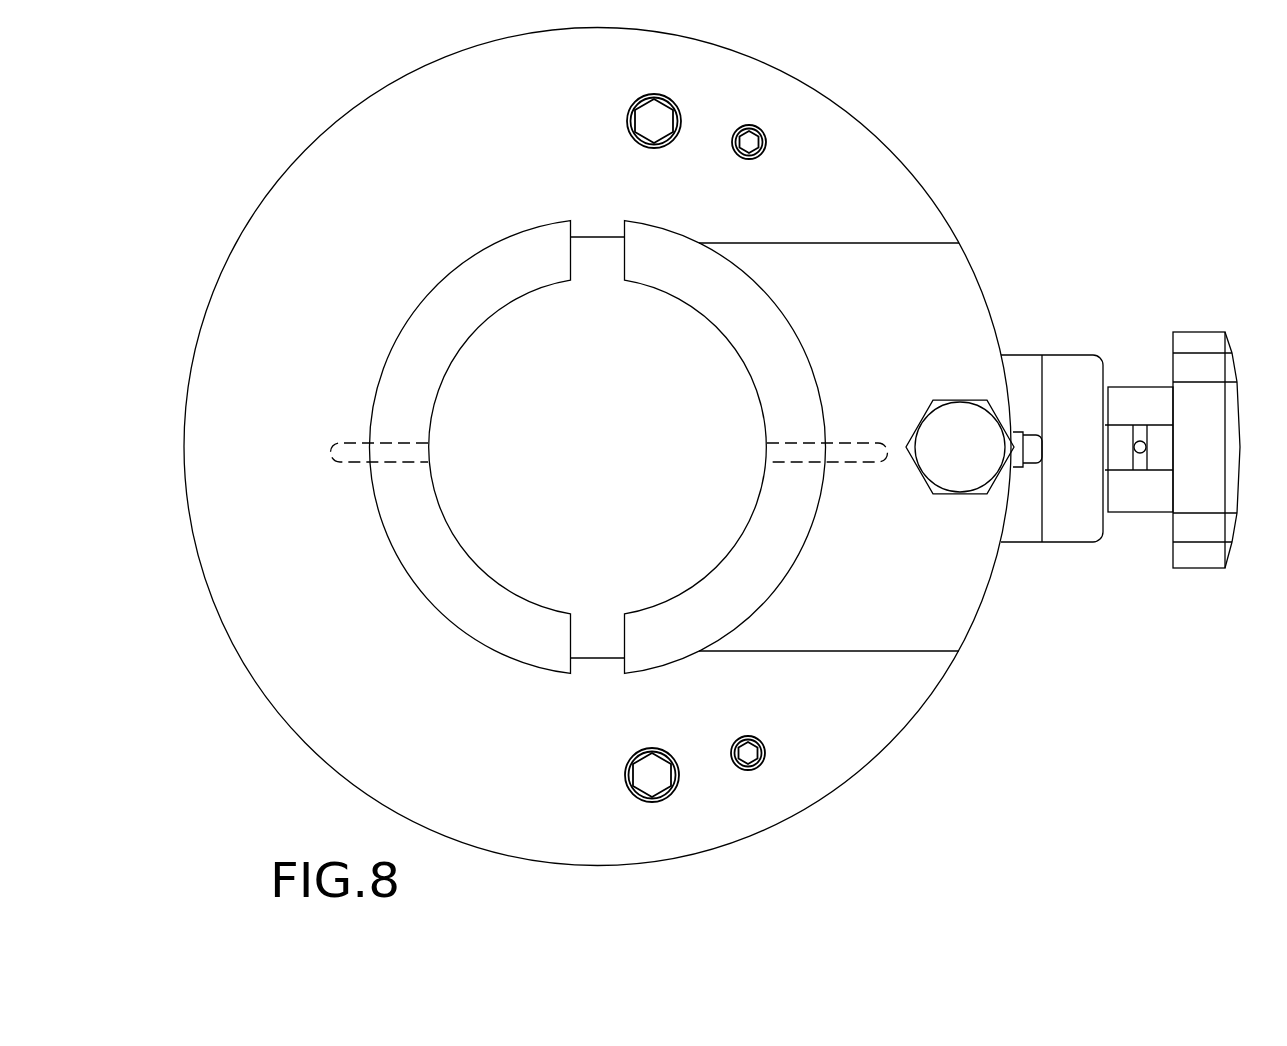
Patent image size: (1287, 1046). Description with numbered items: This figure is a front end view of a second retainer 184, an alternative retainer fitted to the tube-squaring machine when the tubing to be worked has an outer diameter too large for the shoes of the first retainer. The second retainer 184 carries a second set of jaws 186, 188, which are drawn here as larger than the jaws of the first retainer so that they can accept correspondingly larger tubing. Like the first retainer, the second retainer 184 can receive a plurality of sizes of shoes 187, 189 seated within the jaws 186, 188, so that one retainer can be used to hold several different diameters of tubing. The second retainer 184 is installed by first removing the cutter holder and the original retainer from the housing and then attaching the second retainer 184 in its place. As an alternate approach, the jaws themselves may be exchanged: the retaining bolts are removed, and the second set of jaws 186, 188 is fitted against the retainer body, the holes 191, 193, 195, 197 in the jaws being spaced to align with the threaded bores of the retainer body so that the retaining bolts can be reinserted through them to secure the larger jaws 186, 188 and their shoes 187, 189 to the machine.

The second retainer 184 is at (985, 189).
The jaw 186 is at (272, 188).
The shoe 187 is at (475, 519).
The jaw 188 is at (985, 297).
The shoe 189 is at (715, 531).
The hole 191 is at (678, 110).
The hole 193 is at (766, 135).
The hole 195 is at (765, 763).
The hole 197 is at (677, 792).